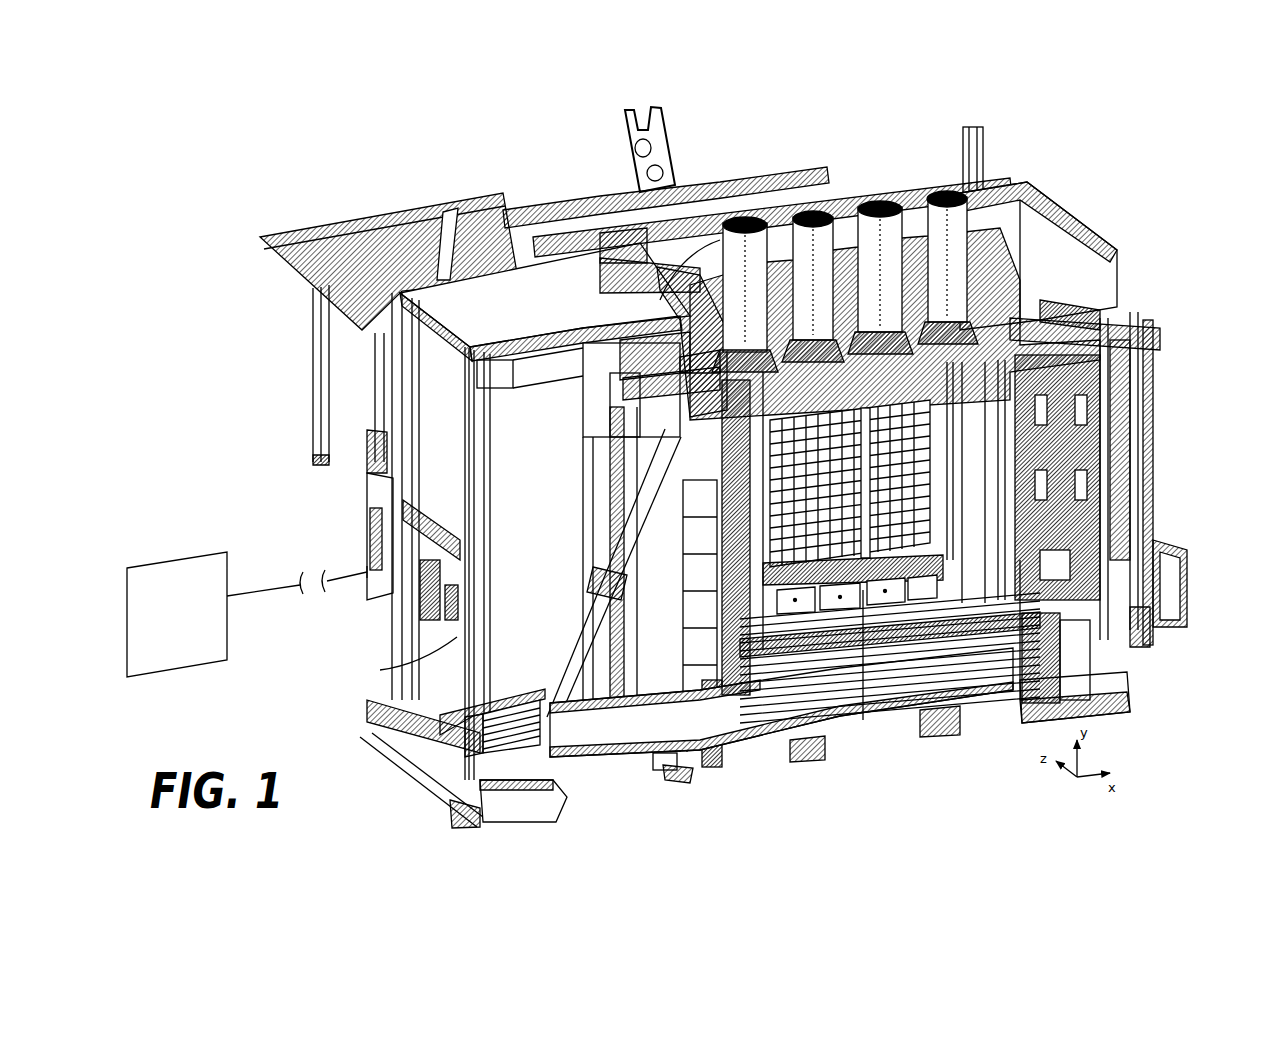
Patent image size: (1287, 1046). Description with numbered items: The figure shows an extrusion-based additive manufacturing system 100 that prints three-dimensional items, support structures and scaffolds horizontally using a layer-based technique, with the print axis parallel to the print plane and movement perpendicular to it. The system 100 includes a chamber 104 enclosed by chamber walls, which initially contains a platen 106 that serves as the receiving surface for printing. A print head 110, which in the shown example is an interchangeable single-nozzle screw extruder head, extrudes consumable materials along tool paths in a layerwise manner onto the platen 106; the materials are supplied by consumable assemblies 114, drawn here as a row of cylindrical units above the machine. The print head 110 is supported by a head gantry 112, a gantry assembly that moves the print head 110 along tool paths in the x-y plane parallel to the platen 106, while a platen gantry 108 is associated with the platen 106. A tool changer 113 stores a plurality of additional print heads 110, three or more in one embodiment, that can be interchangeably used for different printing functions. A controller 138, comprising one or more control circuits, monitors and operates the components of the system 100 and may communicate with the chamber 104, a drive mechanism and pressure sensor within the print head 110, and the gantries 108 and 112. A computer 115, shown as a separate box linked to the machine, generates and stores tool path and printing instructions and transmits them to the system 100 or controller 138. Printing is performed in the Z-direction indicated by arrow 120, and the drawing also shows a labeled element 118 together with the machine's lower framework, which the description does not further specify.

The additive manufacturing system 100 is at (1146, 182).
The chamber 104 is at (1095, 320).
The platen 106 is at (862, 655).
The platen gantry 108 is at (519, 192).
The print head 110 is at (1147, 467).
The head gantry 112 is at (651, 756).
The tool changer 113 is at (1160, 503).
The consumable assemblies 114 is at (770, 216).
The computer 115 is at (175, 553).
The base 118 is at (1017, 680).
The arrow 120 is at (1084, 176).
The controller 138 is at (392, 590).